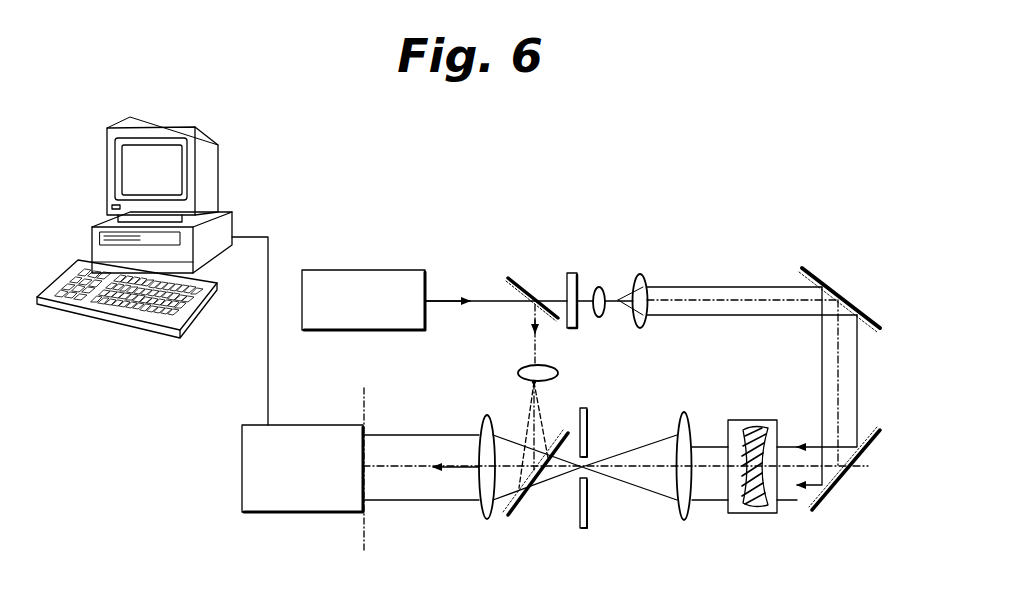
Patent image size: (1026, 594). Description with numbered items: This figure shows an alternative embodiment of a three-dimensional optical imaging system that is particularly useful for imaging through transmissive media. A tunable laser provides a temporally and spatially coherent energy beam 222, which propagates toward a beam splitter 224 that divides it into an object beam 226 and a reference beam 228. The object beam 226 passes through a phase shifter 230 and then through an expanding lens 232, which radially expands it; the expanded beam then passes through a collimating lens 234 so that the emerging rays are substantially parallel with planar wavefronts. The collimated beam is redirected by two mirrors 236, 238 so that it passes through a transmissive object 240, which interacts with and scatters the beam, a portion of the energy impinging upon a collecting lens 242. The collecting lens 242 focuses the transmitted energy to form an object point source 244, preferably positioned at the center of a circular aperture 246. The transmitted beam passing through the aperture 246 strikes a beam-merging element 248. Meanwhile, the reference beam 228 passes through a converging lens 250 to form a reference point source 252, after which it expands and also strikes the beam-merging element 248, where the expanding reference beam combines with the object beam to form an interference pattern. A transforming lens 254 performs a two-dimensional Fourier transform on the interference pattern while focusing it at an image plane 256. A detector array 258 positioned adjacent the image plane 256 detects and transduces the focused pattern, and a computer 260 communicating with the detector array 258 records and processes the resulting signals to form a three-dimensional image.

The energy beam 222 is at (437, 296).
The beam splitter 224 is at (515, 277).
The object beam 226 is at (548, 297).
The reference beam 228 is at (535, 313).
The phase shifter 230 is at (578, 273).
The expanding lens 232 is at (607, 290).
The collimating lens 234 is at (643, 283).
The mirror 236 is at (812, 268).
The mirror 238 is at (823, 497).
The transmissive object 240 is at (753, 513).
The collecting lens 242 is at (683, 418).
The object point source 244 is at (598, 450).
The circular aperture 246 is at (586, 523).
The beam-merging element 248 is at (517, 507).
The converging lens 250 is at (518, 372).
The reference point source 252 is at (526, 387).
The transforming lens 254 is at (487, 517).
The image plane 256 is at (373, 402).
The detector array 258 is at (242, 450).
The computer 260 is at (218, 150).